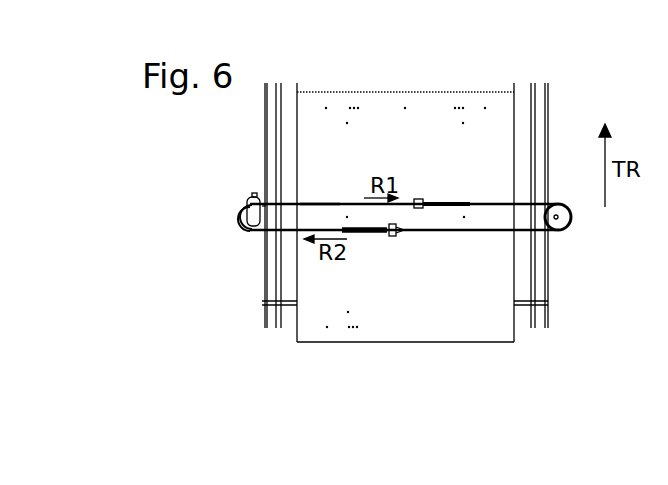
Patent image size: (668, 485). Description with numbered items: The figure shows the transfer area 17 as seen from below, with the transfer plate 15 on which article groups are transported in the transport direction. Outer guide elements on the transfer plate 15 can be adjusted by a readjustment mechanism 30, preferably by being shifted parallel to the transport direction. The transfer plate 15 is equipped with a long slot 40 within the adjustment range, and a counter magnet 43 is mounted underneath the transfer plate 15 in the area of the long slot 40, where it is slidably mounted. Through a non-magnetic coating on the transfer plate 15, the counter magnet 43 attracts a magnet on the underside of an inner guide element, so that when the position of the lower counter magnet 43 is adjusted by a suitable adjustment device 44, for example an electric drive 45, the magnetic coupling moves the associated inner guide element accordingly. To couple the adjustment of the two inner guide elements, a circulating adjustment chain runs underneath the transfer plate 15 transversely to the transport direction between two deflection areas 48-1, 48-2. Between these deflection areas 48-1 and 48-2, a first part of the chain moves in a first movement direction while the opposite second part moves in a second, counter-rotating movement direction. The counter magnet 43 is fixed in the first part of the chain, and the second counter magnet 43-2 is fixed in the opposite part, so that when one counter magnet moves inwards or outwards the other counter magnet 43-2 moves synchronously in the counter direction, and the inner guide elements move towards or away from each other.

The transfer plate 15 is at (418, 143).
The transfer area 17 is at (200, 309).
The readjustment mechanism 30 is at (283, 305).
The long slot 40 is at (467, 202).
The counter magnet 43 is at (390, 236).
The counter magnet 43-2 is at (417, 209).
The adjustment device 44 is at (328, 203).
The electric drive 45 is at (245, 213).
The deflection area 48-1 is at (246, 229).
The deflection area 48-2 is at (566, 232).